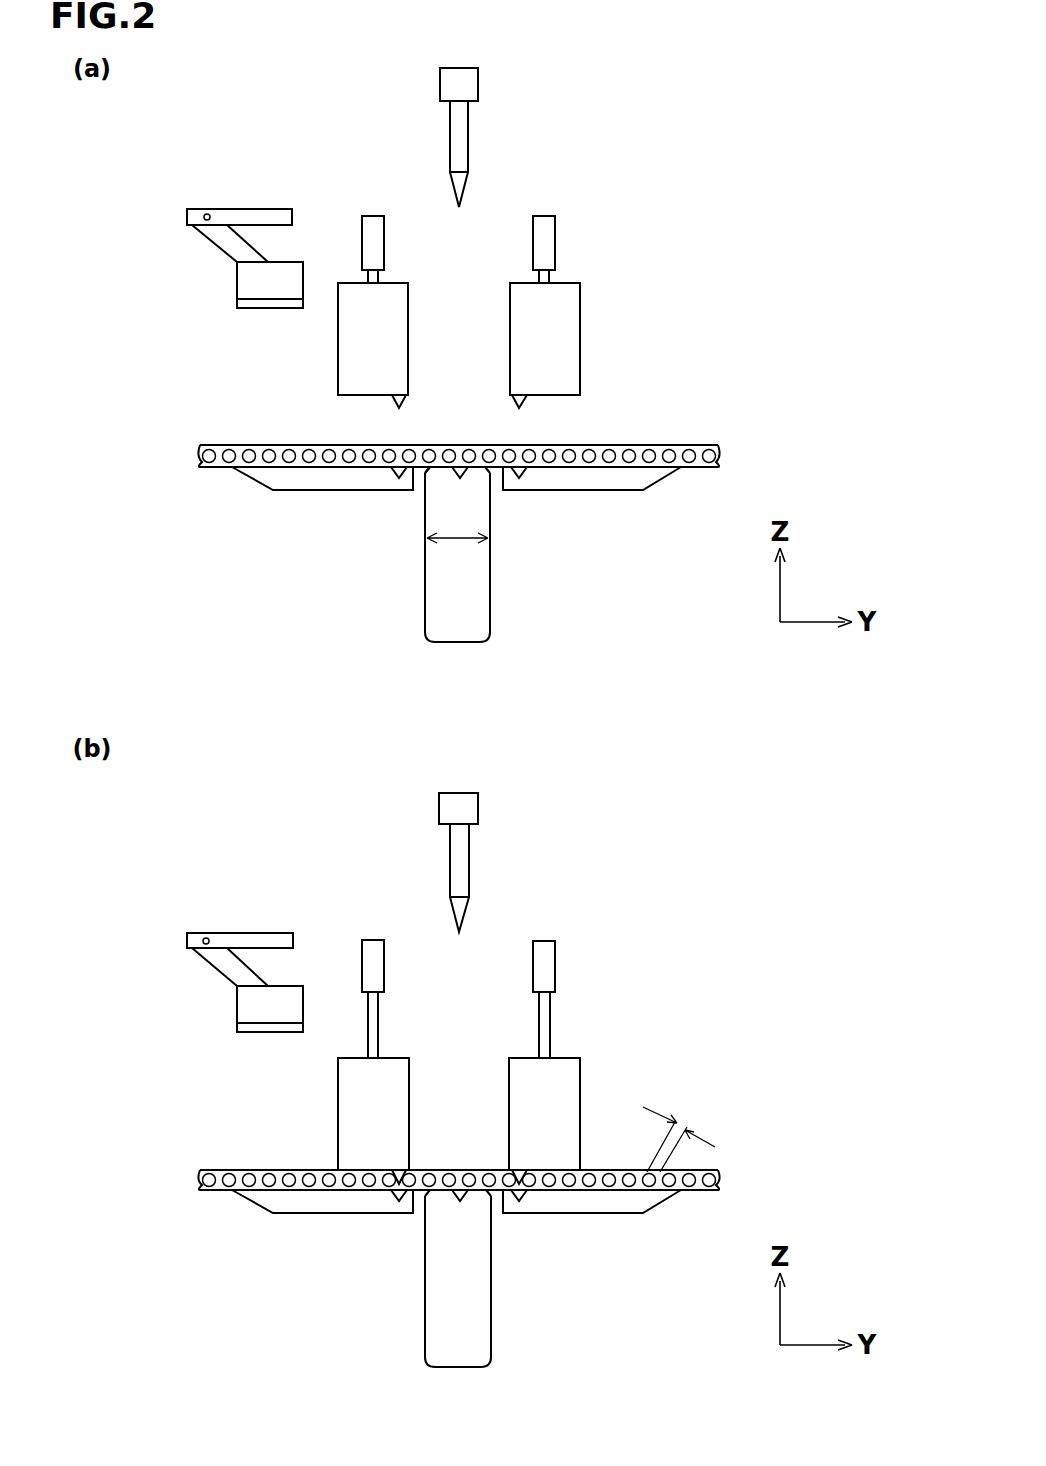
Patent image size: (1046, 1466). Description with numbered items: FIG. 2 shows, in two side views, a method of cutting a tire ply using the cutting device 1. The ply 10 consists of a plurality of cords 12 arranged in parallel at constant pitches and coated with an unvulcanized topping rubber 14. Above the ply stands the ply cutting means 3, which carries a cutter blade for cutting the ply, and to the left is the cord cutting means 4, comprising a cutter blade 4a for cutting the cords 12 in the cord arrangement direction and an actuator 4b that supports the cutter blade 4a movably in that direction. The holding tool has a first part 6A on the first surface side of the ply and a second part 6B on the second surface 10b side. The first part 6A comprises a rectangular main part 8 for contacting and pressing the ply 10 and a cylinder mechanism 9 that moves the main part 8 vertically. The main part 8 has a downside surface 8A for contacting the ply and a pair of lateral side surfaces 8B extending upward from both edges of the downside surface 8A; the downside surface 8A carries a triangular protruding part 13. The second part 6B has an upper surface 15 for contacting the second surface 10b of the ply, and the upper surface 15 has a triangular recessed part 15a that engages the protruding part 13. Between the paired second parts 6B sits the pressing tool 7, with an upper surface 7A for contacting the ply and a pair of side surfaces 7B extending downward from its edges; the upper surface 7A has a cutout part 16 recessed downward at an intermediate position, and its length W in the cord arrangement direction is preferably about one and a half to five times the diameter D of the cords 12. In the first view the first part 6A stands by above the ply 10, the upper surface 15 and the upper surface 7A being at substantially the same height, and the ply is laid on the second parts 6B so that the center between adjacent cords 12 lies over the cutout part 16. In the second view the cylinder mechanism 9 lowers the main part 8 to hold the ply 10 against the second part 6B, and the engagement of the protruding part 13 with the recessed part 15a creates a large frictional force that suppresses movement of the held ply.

The cutting device 1 is at (622, 127).
The ply cutting means 3 is at (458, 123).
The cord cutting means 4 is at (118, 238).
The cutter blade 4a is at (257, 280).
The actuator 4b is at (230, 242).
The first part 6A is at (520, 688).
The second part 6B is at (290, 477).
The pressing tool 7 is at (467, 914).
The upper surface 7A is at (505, 462).
The side surfaces 7B is at (420, 615).
The main part 8 is at (460, 726).
The downside surface 8A is at (547, 397).
The lateral side surfaces 8B is at (510, 337).
The cylinder mechanism 9 is at (545, 240).
The ply 10 is at (491, 838).
The second surface 10b is at (227, 480).
The cords 12 is at (667, 457).
The protruding part 13 is at (515, 400).
The topping rubber 14 is at (640, 458).
The upper surface 15 is at (258, 463).
The recessed part 15a is at (400, 477).
The cutout part 16 is at (430, 468).
The length W is at (440, 545).
The diameter D is at (679, 1134).